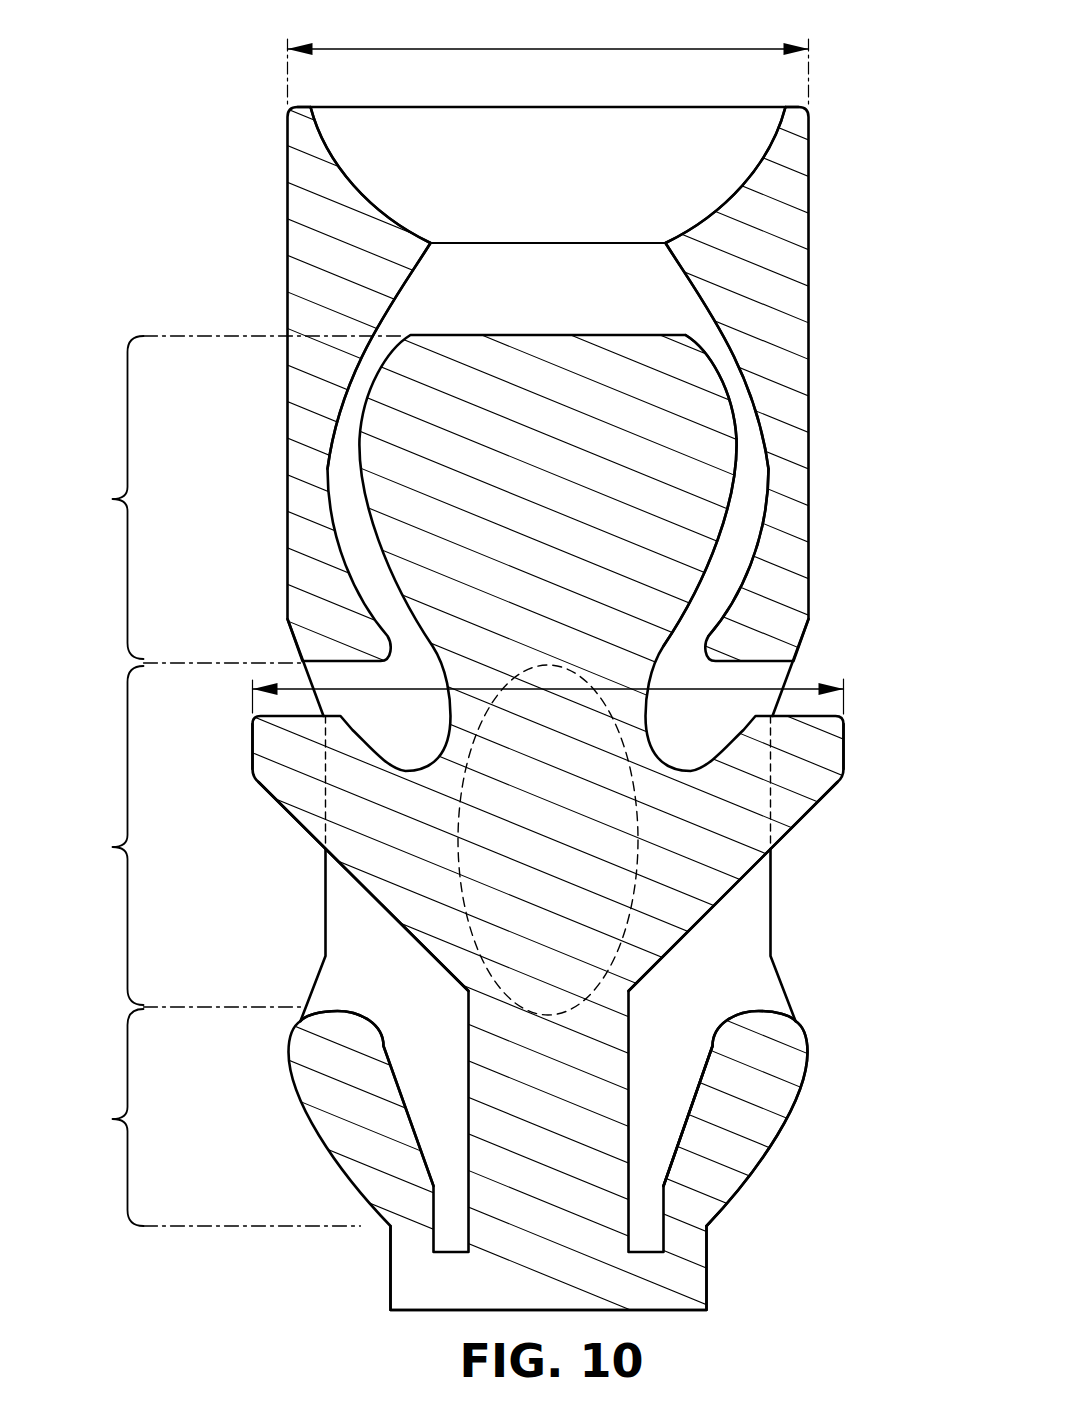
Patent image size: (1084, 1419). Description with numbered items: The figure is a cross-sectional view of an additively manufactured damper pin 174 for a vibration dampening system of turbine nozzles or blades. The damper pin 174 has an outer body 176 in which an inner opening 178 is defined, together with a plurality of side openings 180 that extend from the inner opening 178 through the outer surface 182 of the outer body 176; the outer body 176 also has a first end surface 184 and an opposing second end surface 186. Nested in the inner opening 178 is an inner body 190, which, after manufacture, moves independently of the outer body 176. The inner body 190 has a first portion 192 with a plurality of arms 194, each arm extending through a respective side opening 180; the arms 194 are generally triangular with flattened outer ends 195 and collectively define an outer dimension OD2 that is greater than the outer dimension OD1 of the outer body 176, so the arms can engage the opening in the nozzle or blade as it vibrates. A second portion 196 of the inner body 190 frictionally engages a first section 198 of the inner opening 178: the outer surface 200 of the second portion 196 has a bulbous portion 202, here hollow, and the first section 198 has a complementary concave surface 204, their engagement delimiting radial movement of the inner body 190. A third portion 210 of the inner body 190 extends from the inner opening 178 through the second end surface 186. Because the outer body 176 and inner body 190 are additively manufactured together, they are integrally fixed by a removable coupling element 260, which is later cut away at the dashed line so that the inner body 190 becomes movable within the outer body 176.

The damper pin 174 is at (573, 391).
The outer body 176 is at (755, 297).
The inner opening 178 is at (613, 283).
The side openings 180 is at (365, 915).
The outer surface 182 is at (287, 279).
The first end surface 184 is at (576, 107).
The second end surface 186 is at (728, 1207).
The inner body 190 is at (551, 822).
The first portion 192 is at (178, 836).
The arms 194 is at (295, 775).
The flattened outer end 195 is at (252, 757).
The second portion 196 is at (228, 499).
The first section 198 is at (347, 375).
The outer surface 200 is at (758, 461).
The bulbous portion 202 is at (737, 483).
The concave surface 204 is at (742, 378).
The third portion 210 is at (426, 1117).
The coupling element 260 is at (733, 1283).
The outer dimension OD1 is at (655, 50).
The outer dimension OD2 is at (345, 690).